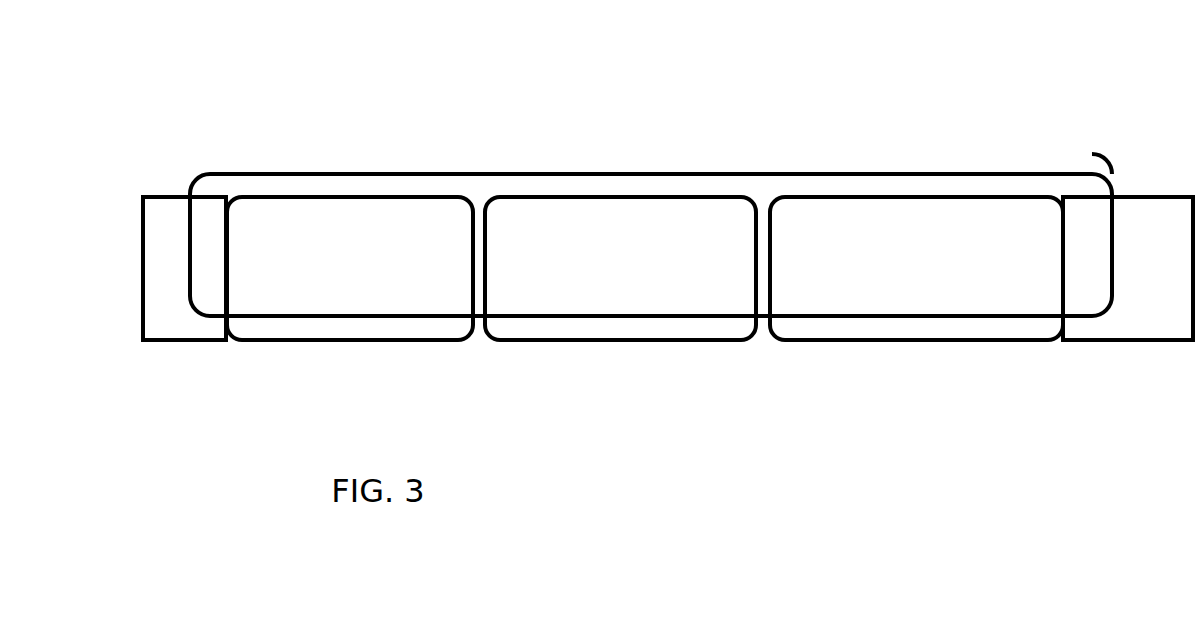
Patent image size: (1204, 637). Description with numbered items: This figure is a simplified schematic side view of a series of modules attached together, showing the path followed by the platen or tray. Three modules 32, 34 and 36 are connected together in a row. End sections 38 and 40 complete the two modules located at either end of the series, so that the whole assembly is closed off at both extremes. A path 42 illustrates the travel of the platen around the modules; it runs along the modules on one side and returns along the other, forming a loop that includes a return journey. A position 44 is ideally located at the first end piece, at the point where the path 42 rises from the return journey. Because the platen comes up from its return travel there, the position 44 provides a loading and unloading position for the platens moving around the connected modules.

The module 32 is at (863, 233).
The module 34 is at (603, 257).
The module 36 is at (320, 222).
The end section 38 is at (1157, 195).
The end section 40 is at (155, 208).
The path 42 is at (390, 175).
The position 44 is at (1073, 160).